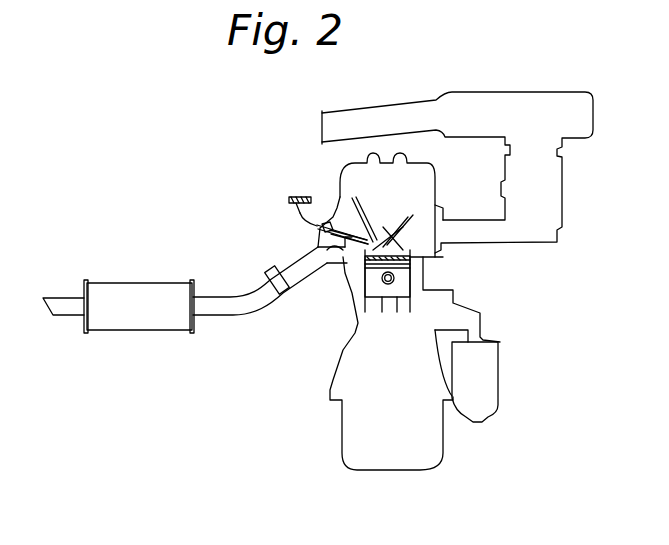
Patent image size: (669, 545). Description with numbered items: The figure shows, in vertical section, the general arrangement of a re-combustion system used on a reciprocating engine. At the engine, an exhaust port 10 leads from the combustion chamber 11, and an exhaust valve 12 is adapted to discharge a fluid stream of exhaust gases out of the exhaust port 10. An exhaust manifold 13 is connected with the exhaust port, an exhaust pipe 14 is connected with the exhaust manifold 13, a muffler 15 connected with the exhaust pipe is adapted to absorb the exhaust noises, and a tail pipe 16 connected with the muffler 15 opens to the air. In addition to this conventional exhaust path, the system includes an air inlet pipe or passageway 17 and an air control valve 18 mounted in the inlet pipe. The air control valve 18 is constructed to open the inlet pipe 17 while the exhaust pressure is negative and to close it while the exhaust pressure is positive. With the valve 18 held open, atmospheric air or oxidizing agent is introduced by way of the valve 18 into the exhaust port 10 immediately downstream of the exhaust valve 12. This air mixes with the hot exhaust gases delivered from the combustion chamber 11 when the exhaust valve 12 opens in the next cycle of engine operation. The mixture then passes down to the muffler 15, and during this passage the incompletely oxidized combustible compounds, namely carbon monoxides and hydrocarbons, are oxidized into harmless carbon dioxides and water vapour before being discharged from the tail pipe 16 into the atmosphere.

The exhaust port 10 is at (342, 253).
The combustion chamber 11 is at (412, 268).
The exhaust valve 12 is at (340, 181).
The exhaust manifold 13 is at (308, 280).
The exhaust pipe 14 is at (223, 317).
The muffler 15 is at (145, 283).
The tail pipe 16 is at (63, 298).
The air inlet pipe 17 is at (312, 242).
The air control valve 18 is at (290, 192).